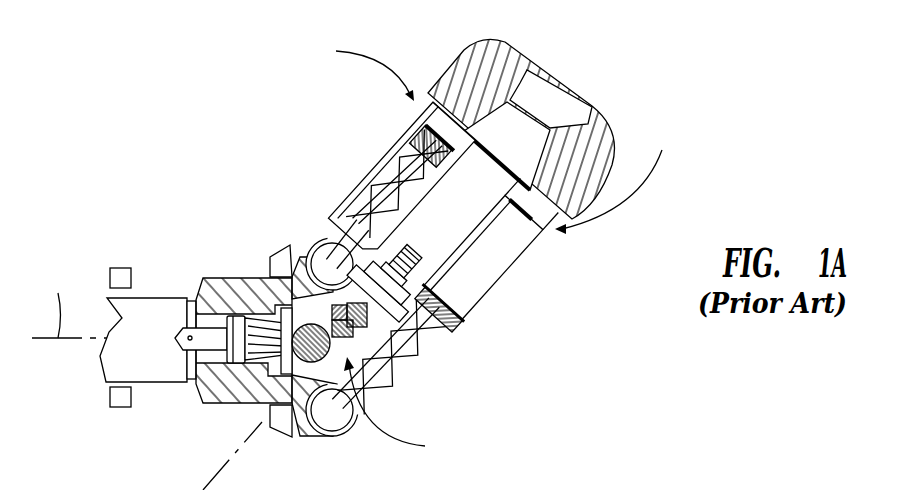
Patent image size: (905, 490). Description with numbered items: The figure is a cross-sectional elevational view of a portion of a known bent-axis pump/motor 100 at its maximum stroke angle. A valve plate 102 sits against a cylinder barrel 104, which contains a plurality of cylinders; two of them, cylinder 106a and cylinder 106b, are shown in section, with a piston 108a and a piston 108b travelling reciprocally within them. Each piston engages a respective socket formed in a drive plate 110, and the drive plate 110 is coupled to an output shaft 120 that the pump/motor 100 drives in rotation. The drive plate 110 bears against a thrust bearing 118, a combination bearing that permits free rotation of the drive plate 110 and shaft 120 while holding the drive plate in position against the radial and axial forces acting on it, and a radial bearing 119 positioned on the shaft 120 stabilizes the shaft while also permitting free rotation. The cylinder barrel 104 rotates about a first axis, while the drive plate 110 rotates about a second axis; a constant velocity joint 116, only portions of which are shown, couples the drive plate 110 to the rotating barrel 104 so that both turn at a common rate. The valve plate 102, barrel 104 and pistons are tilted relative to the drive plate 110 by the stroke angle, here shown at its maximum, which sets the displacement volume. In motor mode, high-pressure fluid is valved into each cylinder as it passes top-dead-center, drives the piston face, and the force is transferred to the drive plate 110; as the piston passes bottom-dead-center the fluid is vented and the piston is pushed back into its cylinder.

The bent-axis pump/motor 100 is at (146, 76).
The valve plate 102 is at (470, 58).
The cylinder barrel 104 is at (383, 165).
The cylinder 106a is at (353, 216).
The cylinder 106b is at (498, 248).
The piston 108a is at (420, 130).
The piston 108b is at (455, 314).
The drive plate 110 is at (298, 239).
The constant velocity joint 116 is at (425, 446).
The thrust bearing 118 is at (283, 426).
The radial bearing 119 is at (121, 268).
The output shaft 120 is at (150, 306).